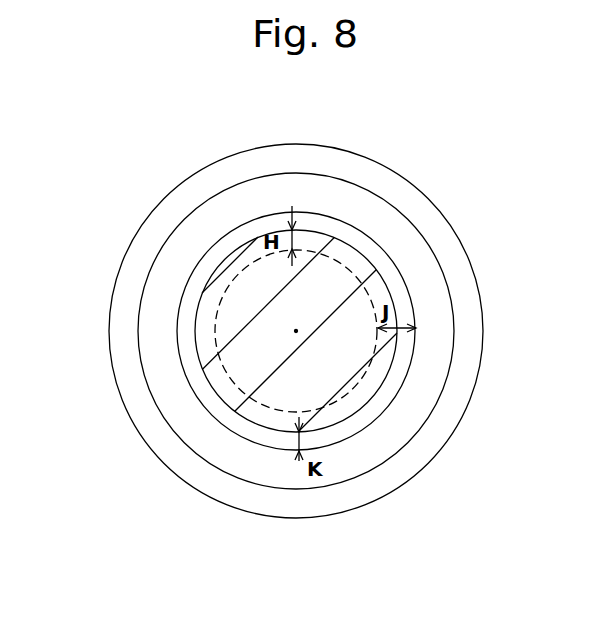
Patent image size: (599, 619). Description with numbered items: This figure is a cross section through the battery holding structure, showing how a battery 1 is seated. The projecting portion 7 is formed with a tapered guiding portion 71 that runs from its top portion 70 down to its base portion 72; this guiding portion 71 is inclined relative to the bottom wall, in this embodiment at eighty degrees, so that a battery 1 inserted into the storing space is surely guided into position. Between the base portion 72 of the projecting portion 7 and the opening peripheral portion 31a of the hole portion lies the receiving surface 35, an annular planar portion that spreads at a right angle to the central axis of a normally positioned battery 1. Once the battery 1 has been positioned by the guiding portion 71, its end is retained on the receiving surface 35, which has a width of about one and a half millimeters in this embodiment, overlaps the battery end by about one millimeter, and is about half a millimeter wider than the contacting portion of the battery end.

The projecting portion 7 is at (385, 173).
The top portion 70 is at (155, 262).
The guiding portion 71 is at (247, 331).
The base portion 72 is at (177, 345).
The receiving surface 35 is at (200, 395).
The battery 1 is at (253, 415).
The opening peripheral portion 31a is at (322, 409).